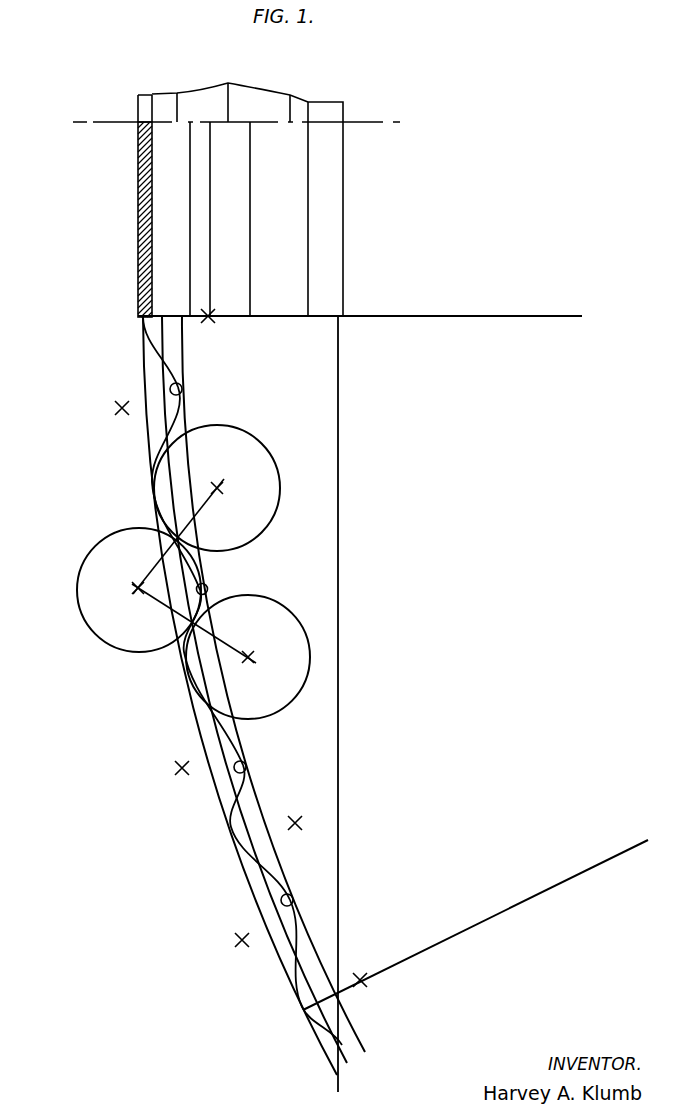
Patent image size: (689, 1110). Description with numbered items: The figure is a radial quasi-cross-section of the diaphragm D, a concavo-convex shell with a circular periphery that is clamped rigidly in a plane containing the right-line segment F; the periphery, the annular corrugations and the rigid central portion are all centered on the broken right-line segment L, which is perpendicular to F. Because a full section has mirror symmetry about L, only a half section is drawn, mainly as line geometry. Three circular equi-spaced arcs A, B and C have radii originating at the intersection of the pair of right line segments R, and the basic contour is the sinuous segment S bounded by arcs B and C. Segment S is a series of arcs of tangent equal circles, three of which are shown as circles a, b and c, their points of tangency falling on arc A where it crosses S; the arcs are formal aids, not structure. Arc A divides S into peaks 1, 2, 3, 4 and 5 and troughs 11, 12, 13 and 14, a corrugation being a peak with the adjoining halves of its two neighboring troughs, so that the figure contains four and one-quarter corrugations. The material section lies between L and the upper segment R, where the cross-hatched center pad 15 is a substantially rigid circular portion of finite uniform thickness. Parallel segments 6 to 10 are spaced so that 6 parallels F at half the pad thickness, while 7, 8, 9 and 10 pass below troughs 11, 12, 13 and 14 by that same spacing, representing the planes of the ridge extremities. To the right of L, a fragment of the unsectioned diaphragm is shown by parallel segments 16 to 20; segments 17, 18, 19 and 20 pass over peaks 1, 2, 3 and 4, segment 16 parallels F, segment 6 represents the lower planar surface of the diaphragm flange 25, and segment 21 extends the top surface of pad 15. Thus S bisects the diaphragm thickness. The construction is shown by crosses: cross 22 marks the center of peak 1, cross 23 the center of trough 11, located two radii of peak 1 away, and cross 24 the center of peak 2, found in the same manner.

The peak 1 is at (300, 977).
The peak 2 is at (232, 815).
The peak 3 is at (193, 713).
The peak 4 is at (160, 465).
The peak 5 is at (150, 343).
The right line segment 6 is at (345, 268).
The right line segment 7 is at (310, 270).
The right line segment 8 is at (252, 268).
The right line segment 9 is at (212, 263).
The right line segment 10 is at (190, 265).
The trough 11 is at (297, 905).
The trough 12 is at (247, 758).
The trough 13 is at (207, 582).
The trough 14 is at (185, 397).
The center pad 15 is at (138, 240).
The right line segment 16 is at (328, 108).
The right line segment 17 is at (287, 110).
The right line segment 18 is at (225, 105).
The right line segment 19 is at (180, 107).
The right line segment 20 is at (156, 108).
The line segment 21 is at (138, 112).
The cross 22 is at (362, 978).
The cross 23 is at (242, 937).
The cross 24 is at (297, 822).
The diaphragm flange 25 is at (335, 110).
The tangent circle a is at (77, 590).
The tangent circle b is at (273, 453).
The tangent circle c is at (293, 610).
The right-line segment L is at (365, 121).
The right line segment R is at (413, 315).
The right-line segment F is at (340, 592).
The diaphragm D is at (88, 421).
The sinuous line segment S is at (262, 879).
The circular arc A is at (347, 1060).
The circular arc B is at (357, 1037).
The circular arc C is at (327, 1060).